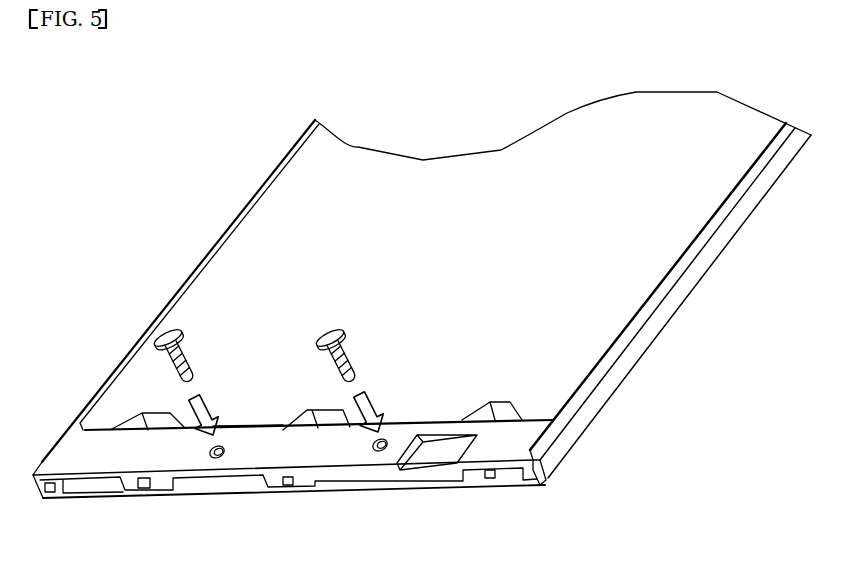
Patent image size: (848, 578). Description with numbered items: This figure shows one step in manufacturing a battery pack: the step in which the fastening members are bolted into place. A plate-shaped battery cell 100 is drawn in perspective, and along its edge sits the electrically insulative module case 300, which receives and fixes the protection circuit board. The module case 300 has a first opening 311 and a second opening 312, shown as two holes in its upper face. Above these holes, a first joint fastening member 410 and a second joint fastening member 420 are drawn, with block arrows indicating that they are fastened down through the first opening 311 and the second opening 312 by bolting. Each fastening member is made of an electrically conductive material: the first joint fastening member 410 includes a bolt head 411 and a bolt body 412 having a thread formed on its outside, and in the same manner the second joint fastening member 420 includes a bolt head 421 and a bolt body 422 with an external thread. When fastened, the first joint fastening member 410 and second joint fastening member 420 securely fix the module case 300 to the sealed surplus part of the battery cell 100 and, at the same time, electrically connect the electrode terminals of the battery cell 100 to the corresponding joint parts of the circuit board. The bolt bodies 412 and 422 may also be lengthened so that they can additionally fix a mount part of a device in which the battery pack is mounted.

The battery cell 100 is at (580, 230).
The module case 300 is at (100, 454).
The first opening 311 is at (207, 452).
The second opening 312 is at (369, 452).
The first joint fastening member 410 is at (235, 327).
The bolt head 411 is at (180, 324).
The bolt body 412 is at (214, 352).
The second joint fastening member 420 is at (397, 327).
The bolt head 421 is at (342, 324).
The bolt body 422 is at (376, 352).